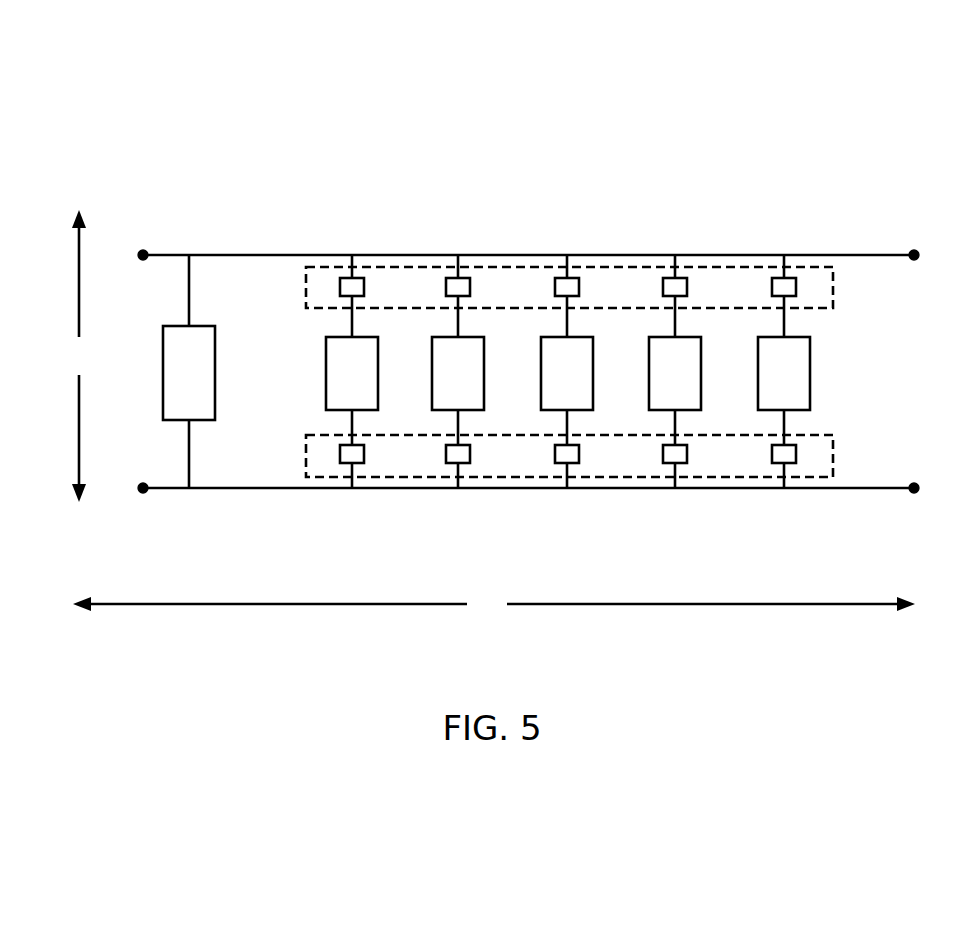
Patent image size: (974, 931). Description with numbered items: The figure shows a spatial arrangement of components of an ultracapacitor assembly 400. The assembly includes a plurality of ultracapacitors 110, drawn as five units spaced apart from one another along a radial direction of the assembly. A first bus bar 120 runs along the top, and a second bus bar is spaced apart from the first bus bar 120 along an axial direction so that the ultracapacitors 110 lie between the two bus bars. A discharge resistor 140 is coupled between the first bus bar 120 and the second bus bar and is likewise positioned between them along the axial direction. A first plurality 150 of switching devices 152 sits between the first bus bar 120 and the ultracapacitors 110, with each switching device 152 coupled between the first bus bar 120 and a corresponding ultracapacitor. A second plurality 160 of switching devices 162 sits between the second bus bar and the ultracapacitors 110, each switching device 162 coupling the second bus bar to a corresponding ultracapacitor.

The ultracapacitor assembly 400 is at (813, 88).
The first bus bar 120 is at (818, 255).
The discharge resistor 140 is at (171, 387).
The plurality of ultracapacitors 110 is at (334, 387).
The first plurality of switching devices 150 is at (850, 293).
The second plurality of switching devices 160 is at (850, 462).
The switching device 152 is at (567, 278).
The switching device 162 is at (567, 463).